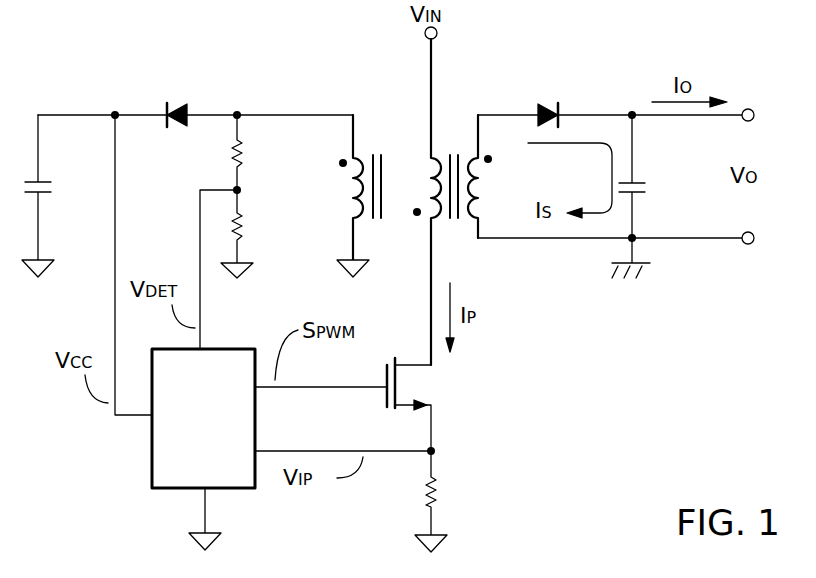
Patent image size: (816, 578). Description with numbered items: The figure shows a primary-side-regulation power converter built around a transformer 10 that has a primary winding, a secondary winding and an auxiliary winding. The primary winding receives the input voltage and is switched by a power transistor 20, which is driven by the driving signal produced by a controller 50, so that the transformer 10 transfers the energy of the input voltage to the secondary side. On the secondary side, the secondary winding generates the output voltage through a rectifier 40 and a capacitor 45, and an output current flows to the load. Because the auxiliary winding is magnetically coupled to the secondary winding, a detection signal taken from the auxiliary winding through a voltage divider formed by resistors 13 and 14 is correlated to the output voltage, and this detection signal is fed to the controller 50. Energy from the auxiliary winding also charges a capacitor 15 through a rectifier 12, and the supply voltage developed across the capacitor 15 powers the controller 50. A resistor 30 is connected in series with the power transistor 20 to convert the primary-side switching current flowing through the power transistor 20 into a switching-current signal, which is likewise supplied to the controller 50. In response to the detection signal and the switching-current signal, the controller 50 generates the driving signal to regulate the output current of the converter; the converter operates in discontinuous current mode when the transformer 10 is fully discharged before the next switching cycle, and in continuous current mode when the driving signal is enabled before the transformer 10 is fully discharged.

The transformer 10 is at (452, 135).
The rectifier 12 is at (178, 102).
The resistor 13 is at (250, 153).
The resistor 14 is at (252, 228).
The capacitor 15 is at (52, 187).
The power transistor 20 is at (437, 385).
The resistor 30 is at (443, 492).
The rectifier 40 is at (547, 100).
The capacitor 45 is at (647, 187).
The controller 50 is at (203, 449).